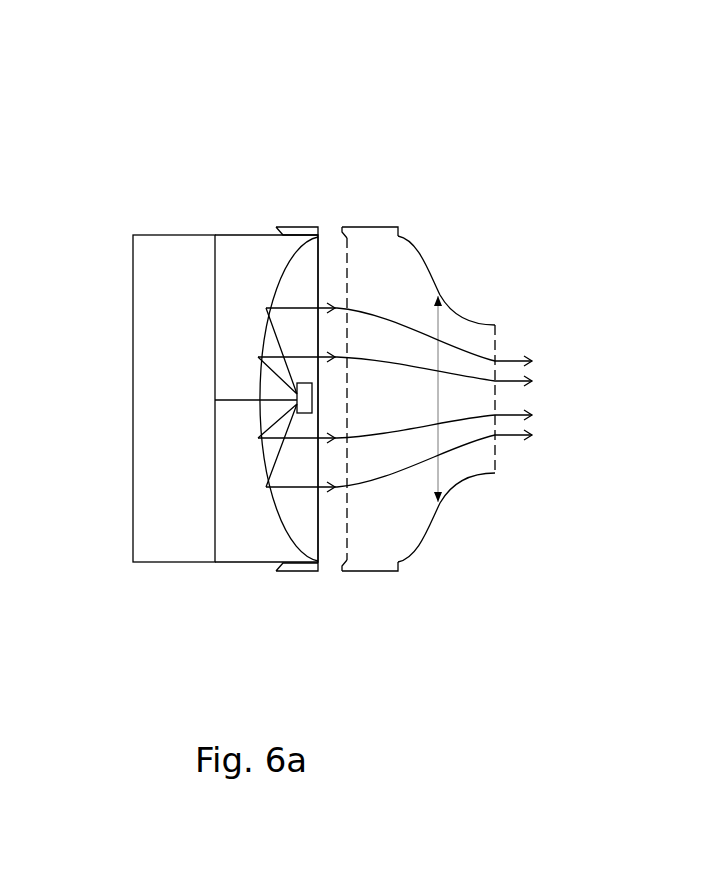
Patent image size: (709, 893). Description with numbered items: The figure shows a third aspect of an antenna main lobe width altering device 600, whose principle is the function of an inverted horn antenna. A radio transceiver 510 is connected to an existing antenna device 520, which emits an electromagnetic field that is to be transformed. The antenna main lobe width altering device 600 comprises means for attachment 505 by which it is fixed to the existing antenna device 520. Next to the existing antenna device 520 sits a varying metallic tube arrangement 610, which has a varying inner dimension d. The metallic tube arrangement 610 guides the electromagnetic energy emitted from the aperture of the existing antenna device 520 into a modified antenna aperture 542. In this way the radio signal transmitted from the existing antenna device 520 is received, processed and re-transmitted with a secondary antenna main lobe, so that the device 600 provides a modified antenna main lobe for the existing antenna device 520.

The antenna main lobe width altering device 600 is at (489, 128).
The means for attachment 505 is at (369, 214).
The radio transceiver 510 is at (173, 233).
The existing antenna device 520 is at (243, 233).
The metallic tube arrangement 610 is at (430, 255).
The modified antenna aperture 542 is at (553, 398).